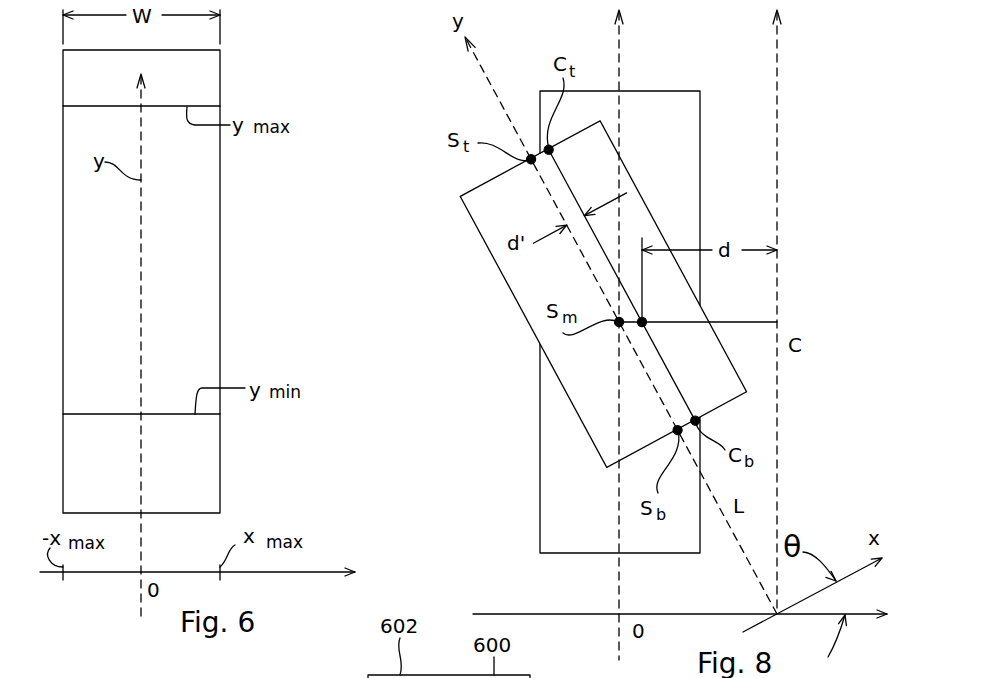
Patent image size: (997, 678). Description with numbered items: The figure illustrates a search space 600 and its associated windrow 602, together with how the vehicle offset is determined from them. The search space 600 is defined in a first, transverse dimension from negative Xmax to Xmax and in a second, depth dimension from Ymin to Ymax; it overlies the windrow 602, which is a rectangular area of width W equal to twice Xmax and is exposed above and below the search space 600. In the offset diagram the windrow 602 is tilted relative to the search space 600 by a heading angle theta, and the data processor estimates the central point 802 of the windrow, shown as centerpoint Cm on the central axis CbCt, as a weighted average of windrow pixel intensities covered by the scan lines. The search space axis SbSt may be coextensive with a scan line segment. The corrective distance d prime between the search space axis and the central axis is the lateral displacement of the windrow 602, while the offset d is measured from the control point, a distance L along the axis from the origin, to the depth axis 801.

In FIG. 6, the search space 600 is at (197, 344).
In FIG. 8, the search space 600 is at (482, 218).
In FIG. 6, the windrow 602 is at (213, 77).
In FIG. 8, the windrow 602 is at (672, 102).
In FIG. 8, the depth axis 801 is at (777, 185).
In FIG. 8, the central point 802 is at (641, 322).